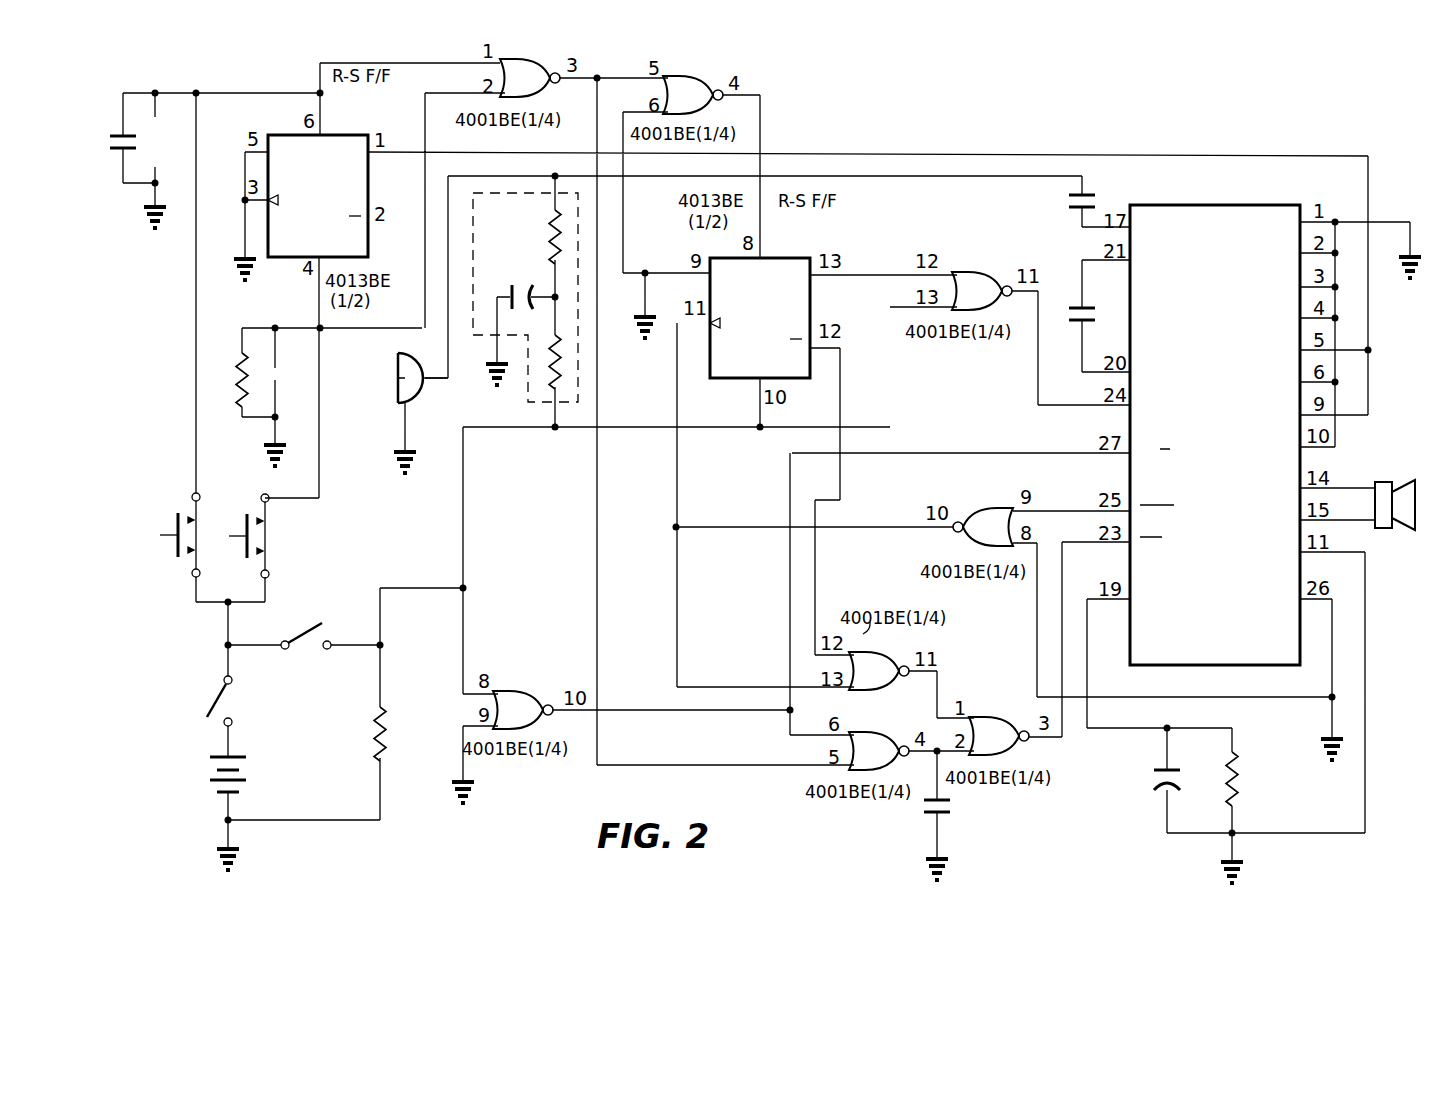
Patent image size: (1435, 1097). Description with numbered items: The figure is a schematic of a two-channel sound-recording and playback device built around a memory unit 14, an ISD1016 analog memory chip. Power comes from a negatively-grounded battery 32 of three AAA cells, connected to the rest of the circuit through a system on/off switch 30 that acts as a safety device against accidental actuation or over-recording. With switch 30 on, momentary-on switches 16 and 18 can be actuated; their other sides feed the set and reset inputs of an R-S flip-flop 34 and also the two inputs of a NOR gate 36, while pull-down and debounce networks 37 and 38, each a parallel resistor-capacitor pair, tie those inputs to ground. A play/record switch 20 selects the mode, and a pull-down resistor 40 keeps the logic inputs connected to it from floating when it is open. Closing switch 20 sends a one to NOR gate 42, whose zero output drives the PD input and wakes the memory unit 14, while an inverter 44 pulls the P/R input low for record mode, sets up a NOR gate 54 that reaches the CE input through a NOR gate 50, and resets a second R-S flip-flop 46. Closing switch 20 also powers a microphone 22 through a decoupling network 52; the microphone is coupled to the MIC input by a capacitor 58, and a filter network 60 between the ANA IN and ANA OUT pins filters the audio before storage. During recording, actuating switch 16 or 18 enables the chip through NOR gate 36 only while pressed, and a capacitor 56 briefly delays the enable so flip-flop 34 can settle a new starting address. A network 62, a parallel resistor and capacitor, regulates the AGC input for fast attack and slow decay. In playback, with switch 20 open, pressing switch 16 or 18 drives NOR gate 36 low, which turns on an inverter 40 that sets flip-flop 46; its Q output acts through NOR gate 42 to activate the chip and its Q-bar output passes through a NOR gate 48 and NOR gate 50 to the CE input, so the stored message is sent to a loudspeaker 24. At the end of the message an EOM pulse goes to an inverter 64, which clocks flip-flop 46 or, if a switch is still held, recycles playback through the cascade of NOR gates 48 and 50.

The memory unit 14 is at (1213, 208).
The momentary-on switch 16 is at (168, 512).
The momentary-on switch 18 is at (272, 538).
The play/record switch 20 is at (306, 628).
The microphone 22 is at (398, 378).
The loudspeaker 24 is at (1404, 530).
The system on/off switch 30 is at (207, 704).
The battery 32 is at (256, 770).
The R-S flip-flop 34 is at (332, 135).
The NOR gate 36 is at (533, 89).
The pull-down and debounce network 37 is at (128, 175).
The pull-down and debounce network 38 is at (261, 402).
The pull-down resistor / inverter 40 is at (696, 106).
The NOR gate 42 is at (985, 302).
The inverter 44 is at (526, 721).
The R-S flip-flop 46 is at (788, 258).
The NOR gate 48 is at (882, 682).
The NOR gate 50 is at (1002, 747).
The decoupling network 52 is at (515, 242).
The NOR gate 54 is at (882, 762).
The capacitor 56 is at (945, 816).
The capacitor 58 is at (1070, 214).
The filter network 60 is at (1075, 330).
The network 62 is at (1185, 806).
The inverter 64 is at (997, 538).